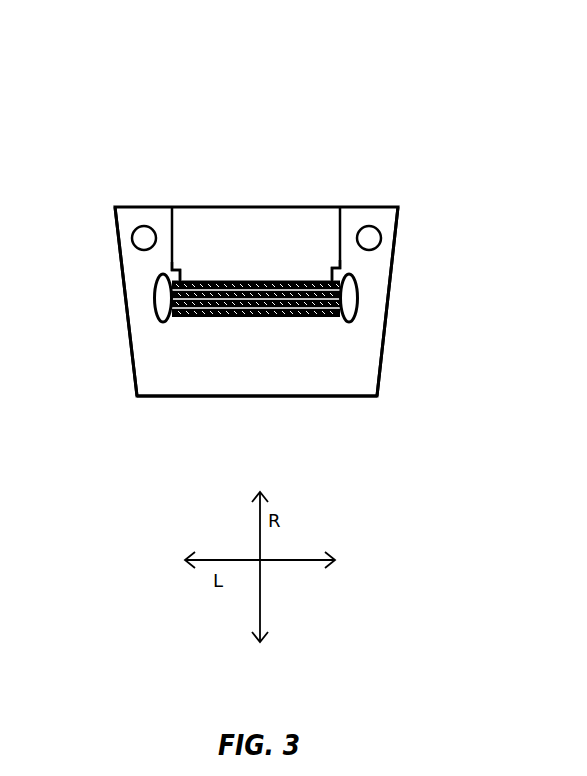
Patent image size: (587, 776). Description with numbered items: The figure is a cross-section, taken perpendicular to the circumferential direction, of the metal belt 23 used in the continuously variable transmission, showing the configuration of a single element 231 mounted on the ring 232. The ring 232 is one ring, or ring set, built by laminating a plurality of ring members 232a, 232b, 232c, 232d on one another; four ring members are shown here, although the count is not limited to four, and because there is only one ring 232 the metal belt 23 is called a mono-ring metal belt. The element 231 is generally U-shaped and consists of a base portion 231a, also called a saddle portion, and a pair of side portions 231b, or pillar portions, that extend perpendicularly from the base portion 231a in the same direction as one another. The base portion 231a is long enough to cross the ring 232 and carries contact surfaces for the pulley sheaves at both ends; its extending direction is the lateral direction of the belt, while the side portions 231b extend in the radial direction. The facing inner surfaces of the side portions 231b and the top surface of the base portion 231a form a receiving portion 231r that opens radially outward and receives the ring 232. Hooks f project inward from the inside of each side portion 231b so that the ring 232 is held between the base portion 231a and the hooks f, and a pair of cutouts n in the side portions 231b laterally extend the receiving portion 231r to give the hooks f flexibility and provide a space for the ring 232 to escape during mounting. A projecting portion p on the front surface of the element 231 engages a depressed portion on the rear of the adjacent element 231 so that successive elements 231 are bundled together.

The metal belt 23 is at (383, 90).
The element 231 is at (378, 207).
The base portion 231a is at (168, 378).
The side portion 231b is at (128, 277).
The receiving portion 231r is at (280, 228).
The ring 232 is at (263, 281).
The ring member 232a is at (355, 278).
The ring member 232b is at (357, 287).
The ring member 232c is at (358, 302).
The ring member 232d is at (358, 310).
The hook f is at (186, 278).
The projecting portion p is at (132, 237).
The cutout n is at (156, 314).